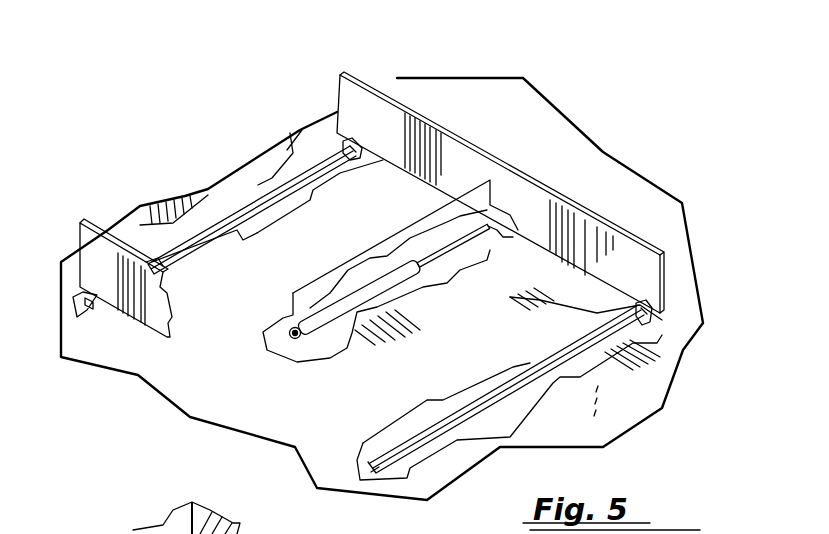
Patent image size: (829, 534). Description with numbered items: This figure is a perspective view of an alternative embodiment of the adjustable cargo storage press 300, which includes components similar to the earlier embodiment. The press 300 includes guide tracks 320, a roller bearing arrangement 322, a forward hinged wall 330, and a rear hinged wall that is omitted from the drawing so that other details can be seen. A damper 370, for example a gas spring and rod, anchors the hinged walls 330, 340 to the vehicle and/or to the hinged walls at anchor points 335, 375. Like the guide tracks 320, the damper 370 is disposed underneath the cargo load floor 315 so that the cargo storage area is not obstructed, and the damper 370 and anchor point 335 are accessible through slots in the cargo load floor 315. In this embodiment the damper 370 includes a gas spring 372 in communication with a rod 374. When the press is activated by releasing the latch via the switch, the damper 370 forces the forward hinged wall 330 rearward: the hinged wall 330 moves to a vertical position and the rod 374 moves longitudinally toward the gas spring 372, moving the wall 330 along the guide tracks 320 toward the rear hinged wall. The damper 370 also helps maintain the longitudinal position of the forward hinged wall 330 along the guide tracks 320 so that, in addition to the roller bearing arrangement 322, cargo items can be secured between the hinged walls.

The adjustable cargo storage press 300 is at (385, 264).
The cargo load floor 315 is at (240, 377).
The guide tracks 320 is at (258, 198).
The roller bearing arrangement 322 is at (338, 147).
The forward hinged wall 330 is at (470, 172).
The anchor point 335 is at (493, 220).
The hinged wall 340 is at (97, 252).
The damper 370 is at (383, 264).
The gas spring 372 is at (347, 350).
The rod 374 is at (447, 250).
The anchor point 375 is at (293, 333).